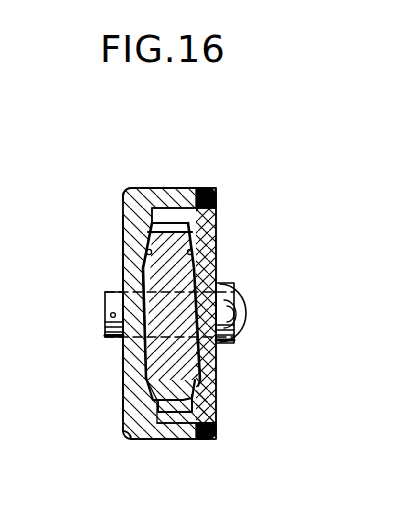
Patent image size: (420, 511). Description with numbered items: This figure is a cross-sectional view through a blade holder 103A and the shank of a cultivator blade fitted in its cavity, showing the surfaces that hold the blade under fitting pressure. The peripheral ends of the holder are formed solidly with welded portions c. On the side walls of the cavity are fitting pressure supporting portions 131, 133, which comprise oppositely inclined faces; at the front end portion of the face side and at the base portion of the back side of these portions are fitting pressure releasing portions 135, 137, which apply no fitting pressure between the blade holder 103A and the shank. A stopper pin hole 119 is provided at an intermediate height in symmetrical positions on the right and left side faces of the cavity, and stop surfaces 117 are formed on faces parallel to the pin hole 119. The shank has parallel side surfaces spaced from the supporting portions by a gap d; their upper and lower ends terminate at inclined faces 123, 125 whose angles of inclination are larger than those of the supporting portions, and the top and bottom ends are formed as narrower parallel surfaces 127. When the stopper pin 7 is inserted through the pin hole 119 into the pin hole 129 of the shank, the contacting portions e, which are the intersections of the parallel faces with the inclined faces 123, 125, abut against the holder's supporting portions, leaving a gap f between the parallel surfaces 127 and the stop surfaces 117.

The stopper pin 7 is at (246, 313).
The housing 103A is at (175, 232).
The stop surfaces 117 is at (183, 222).
The stopper pin hole 119 is at (124, 352).
The inclined face 123 is at (124, 226).
The inclined face 125 is at (212, 222).
The parallel surfaces 127 is at (126, 194).
The pin hole 129 is at (215, 411).
The fitting pressure supporting portion 131 is at (141, 268).
The fitting pressure supporting portion 133 is at (197, 268).
The fitting pressure releasing portion 135 is at (135, 386).
The fitting pressure releasing portion 137 is at (210, 390).
The welded portions c is at (224, 194).
The gap d is at (146, 358).
The contacting portions e is at (146, 252).
The gap f is at (188, 188).